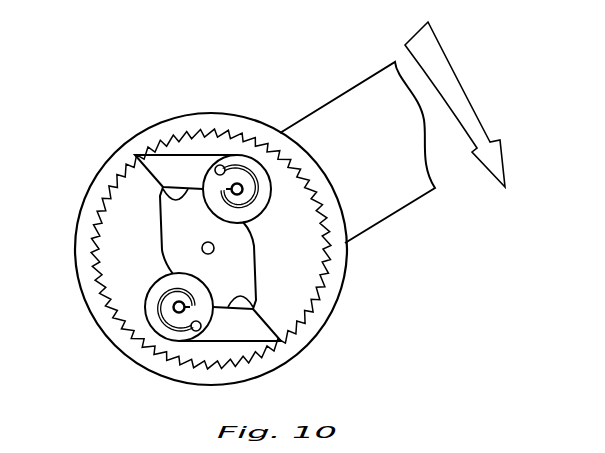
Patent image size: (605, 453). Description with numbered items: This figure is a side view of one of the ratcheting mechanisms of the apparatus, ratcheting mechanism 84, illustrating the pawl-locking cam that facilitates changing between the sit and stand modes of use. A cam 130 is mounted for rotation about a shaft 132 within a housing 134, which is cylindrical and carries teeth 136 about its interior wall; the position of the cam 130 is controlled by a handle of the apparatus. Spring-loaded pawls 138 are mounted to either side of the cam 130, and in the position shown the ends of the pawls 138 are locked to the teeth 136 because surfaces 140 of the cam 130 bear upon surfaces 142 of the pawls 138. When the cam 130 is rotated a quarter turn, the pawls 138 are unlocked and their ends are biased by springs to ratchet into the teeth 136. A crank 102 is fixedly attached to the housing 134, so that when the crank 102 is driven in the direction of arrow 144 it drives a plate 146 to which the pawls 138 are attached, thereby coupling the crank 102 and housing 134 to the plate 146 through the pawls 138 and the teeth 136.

The ratcheting mechanism 84 is at (288, 112).
The crank 102 is at (398, 191).
The cam 130 is at (252, 236).
The shaft 132 is at (210, 242).
The housing 134 is at (340, 274).
The teeth 136 is at (308, 174).
The spring-loaded pawls 138 is at (125, 171).
The surfaces of cam 140 is at (162, 203).
The surfaces of pawls 142 is at (177, 172).
The arrow 144 is at (470, 100).
The plate 146 is at (140, 266).